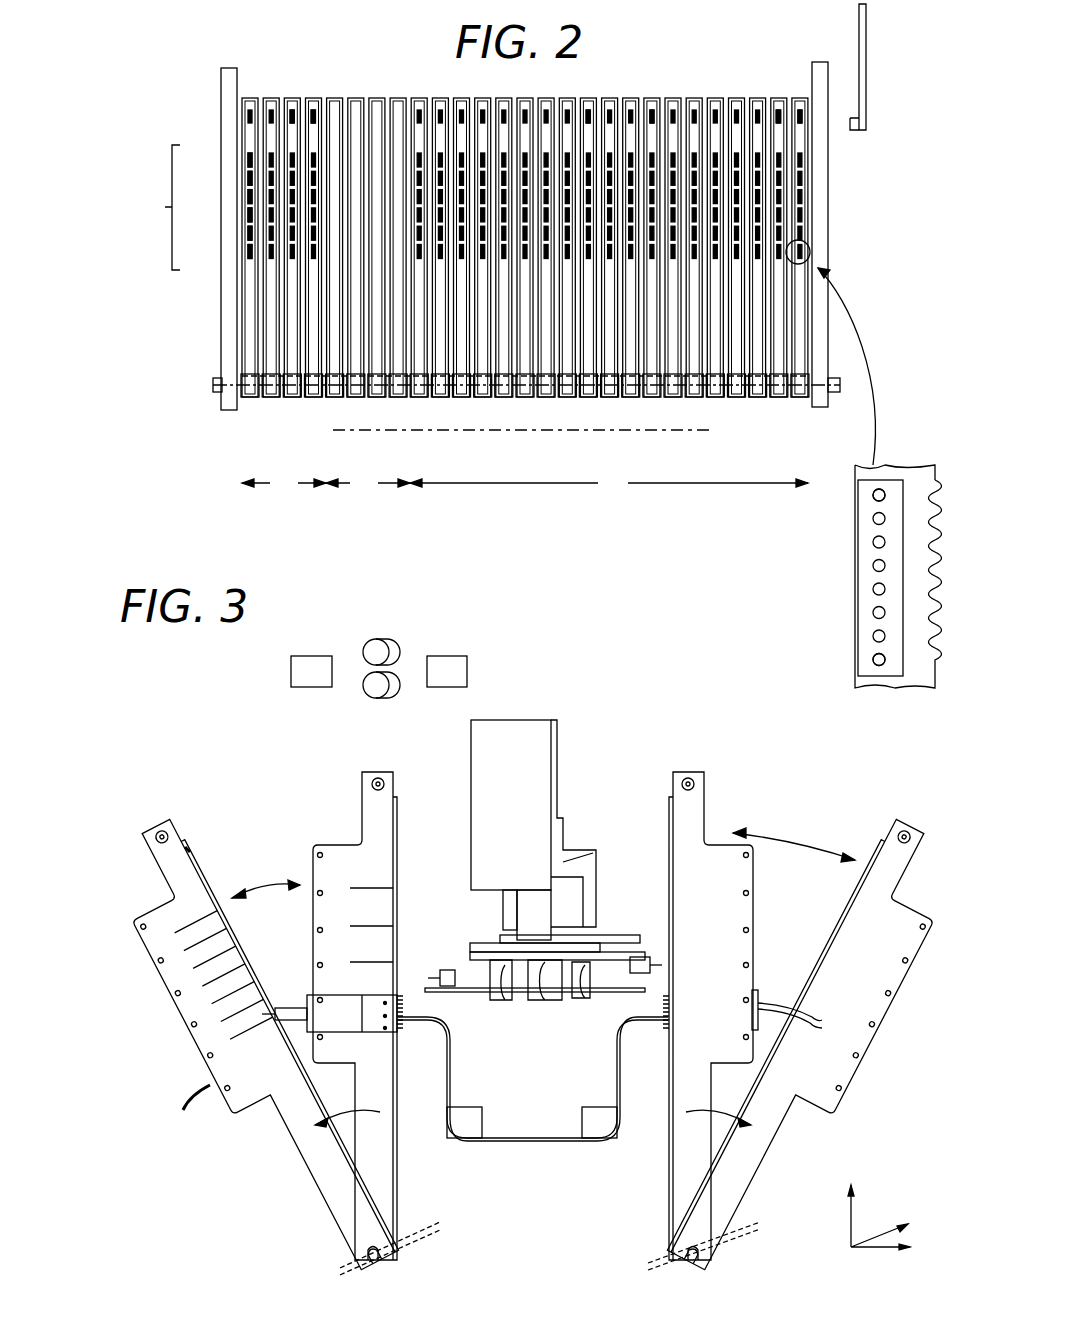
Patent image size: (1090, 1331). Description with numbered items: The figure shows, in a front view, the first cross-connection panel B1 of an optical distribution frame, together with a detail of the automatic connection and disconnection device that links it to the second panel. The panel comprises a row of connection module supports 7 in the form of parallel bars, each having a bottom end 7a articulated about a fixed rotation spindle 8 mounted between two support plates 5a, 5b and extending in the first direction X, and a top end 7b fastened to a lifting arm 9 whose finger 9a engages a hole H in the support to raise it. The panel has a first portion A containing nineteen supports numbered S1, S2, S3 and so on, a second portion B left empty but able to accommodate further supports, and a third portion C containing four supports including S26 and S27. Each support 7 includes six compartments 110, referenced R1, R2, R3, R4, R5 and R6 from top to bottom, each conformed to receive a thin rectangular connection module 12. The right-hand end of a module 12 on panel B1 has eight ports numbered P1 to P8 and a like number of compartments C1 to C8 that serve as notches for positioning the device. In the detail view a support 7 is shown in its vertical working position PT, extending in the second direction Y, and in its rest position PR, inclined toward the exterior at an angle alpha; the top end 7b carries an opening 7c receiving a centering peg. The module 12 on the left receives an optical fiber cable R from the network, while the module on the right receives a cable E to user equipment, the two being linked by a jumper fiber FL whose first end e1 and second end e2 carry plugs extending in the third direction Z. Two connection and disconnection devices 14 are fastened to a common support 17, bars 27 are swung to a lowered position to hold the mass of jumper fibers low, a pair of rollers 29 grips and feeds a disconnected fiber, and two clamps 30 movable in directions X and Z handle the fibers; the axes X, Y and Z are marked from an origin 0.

In FIG. 2, the support plate 5a is at (822, 70).
In FIG. 2, the support plate 5b is at (232, 75).
In FIG. 2, the support 7 is at (350, 97).
In FIG. 3, the support 7 is at (362, 776).
In FIG. 2, the bottom end 7a is at (278, 398).
In FIG. 3, the bottom end 7a is at (373, 1262).
In FIG. 2, the top end 7b is at (313, 100).
In FIG. 3, the top end 7b is at (395, 780).
In FIG. 2, the opening 7c is at (650, 112).
In FIG. 3, the opening 7c is at (192, 851).
In FIG. 2, the rotation spindle 8 is at (213, 385).
In FIG. 3, the rotation spindle 8 is at (440, 1224).
In FIG. 2, the lifting arm 9 is at (867, 28).
In FIG. 2, the finger 9a is at (852, 126).
In FIG. 2, the connection module 12 is at (892, 700).
In FIG. 3, the connection module 12 is at (330, 995).
In FIG. 3, the connection and disconnection device 14 is at (450, 972).
In FIG. 3, the common support 17 is at (540, 795).
In FIG. 3, the bar 27 is at (586, 1112).
In FIG. 3, the rollers 29 is at (373, 683).
In FIG. 3, the clamp 30 is at (291, 675).
In FIG. 3, the compartment 110 is at (162, 962).
In FIG. 2, the compartment reference R1 is at (248, 160).
In FIG. 2, the compartment reference R2 is at (248, 178).
In FIG. 2, the compartment reference R3 is at (248, 197).
In FIG. 2, the compartment reference R4 is at (248, 215).
In FIG. 2, the compartment reference R5 is at (248, 233).
In FIG. 2, the compartment reference R6 is at (248, 252).
In FIG. 2, the support number S1 is at (797, 398).
In FIG. 2, the support number S2 is at (775, 398).
In FIG. 2, the support number S3 is at (752, 398).
In FIG. 2, the support number S26 is at (275, 398).
In FIG. 2, the support number S27 is at (249, 398).
In FIG. 2, the compartment C1 is at (935, 492).
In FIG. 2, the compartment C8 is at (935, 658).
In FIG. 2, the port P1 is at (872, 495).
In FIG. 2, the port P8 is at (872, 659).
In FIG. 2, the first portion A is at (609, 484).
In FIG. 2, the second portion B is at (368, 484).
In FIG. 2, the third portion C is at (284, 484).
In FIG. 2, the first cross-connection panel B1 is at (437, 505).
In FIG. 3, the working position PT is at (533, 737).
In FIG. 3, the rest position PR is at (528, 785).
In FIG. 3, the hole H is at (370, 787).
In FIG. 3, the optical fiber cable R is at (282, 1008).
In FIG. 3, the optical fiber cable E is at (823, 1020).
In FIG. 3, the first end e1 is at (419, 1044).
In FIG. 3, the second end e2 is at (642, 1044).
In FIG. 3, the jumper fiber FL is at (520, 1142).
In FIG. 3, the inclination angle alpha is at (533, 1107).
In FIG. 3, the origin 0 is at (873, 1227).
In FIG. 3, the first direction X is at (923, 1215).
In FIG. 3, the second direction Y is at (849, 1171).
In FIG. 3, the third direction Z is at (923, 1247).